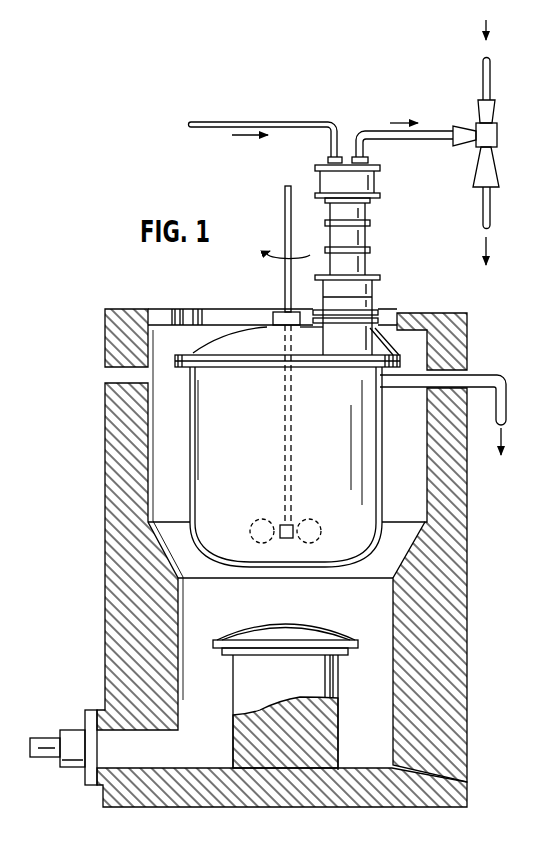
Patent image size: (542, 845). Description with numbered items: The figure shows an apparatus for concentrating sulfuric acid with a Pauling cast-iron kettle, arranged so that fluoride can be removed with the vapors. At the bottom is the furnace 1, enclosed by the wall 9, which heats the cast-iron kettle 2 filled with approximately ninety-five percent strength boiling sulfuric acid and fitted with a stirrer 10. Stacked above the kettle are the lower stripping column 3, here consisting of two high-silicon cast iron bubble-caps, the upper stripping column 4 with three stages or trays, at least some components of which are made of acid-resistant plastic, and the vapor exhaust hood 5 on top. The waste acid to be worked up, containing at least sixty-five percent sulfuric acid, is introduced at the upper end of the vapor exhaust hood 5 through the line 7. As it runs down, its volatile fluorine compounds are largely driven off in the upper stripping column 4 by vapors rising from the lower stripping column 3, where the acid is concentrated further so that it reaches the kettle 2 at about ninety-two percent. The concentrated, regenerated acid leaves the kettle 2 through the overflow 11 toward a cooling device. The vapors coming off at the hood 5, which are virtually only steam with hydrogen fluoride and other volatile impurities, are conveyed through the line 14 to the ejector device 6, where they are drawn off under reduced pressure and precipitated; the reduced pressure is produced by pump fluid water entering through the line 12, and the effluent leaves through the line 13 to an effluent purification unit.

The furnace 1 is at (278, 607).
The cast-iron kettle 2 is at (382, 478).
The lower stripping column 3 is at (386, 292).
The upper stripping column 4 is at (374, 238).
The vapor exhaust hood 5 is at (372, 184).
The ejector device 6 is at (476, 145).
The line 7 is at (213, 128).
The wall 9 is at (107, 560).
The stirrer 10 is at (285, 228).
The overflow 11 is at (390, 387).
The line 12 is at (483, 80).
The line 13 is at (483, 214).
The line 14 is at (417, 140).